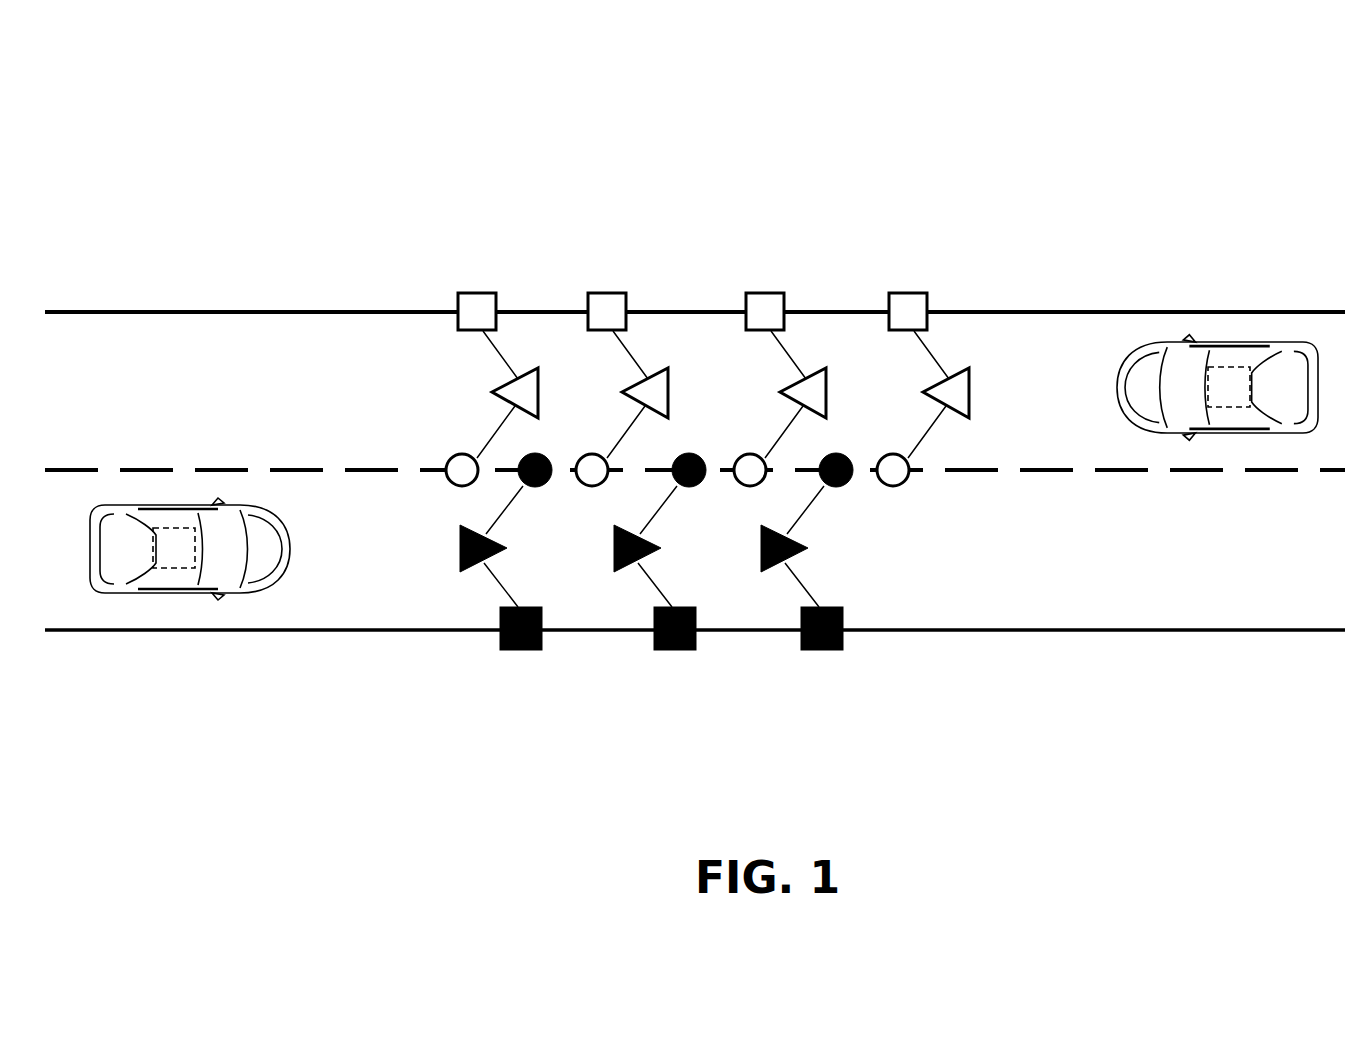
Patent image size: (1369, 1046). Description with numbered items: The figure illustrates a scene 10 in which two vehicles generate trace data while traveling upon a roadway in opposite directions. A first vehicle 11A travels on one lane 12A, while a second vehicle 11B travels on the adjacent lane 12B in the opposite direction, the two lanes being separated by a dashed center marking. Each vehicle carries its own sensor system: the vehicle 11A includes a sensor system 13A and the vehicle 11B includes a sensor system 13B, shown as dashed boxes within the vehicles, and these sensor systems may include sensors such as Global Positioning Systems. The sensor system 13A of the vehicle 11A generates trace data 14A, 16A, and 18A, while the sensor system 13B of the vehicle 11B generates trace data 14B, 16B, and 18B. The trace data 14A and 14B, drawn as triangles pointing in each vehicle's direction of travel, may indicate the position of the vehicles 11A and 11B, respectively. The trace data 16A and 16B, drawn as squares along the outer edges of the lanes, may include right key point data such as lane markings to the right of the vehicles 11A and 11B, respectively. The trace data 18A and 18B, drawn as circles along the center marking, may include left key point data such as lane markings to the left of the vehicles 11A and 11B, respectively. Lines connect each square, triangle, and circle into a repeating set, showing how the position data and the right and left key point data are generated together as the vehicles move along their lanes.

The scene 10 is at (1145, 158).
The vehicle 11A is at (155, 593).
The vehicle 11B is at (1227, 353).
The lane 12A is at (996, 596).
The lane 12B is at (996, 362).
The sensor system 13A is at (183, 584).
The sensor system 13B is at (1237, 367).
The trace data 14A is at (478, 568).
The trace data 14B is at (517, 370).
The trace data 16A is at (527, 650).
The trace data 16B is at (473, 292).
The trace data 18A is at (535, 487).
The trace data 18B is at (462, 454).